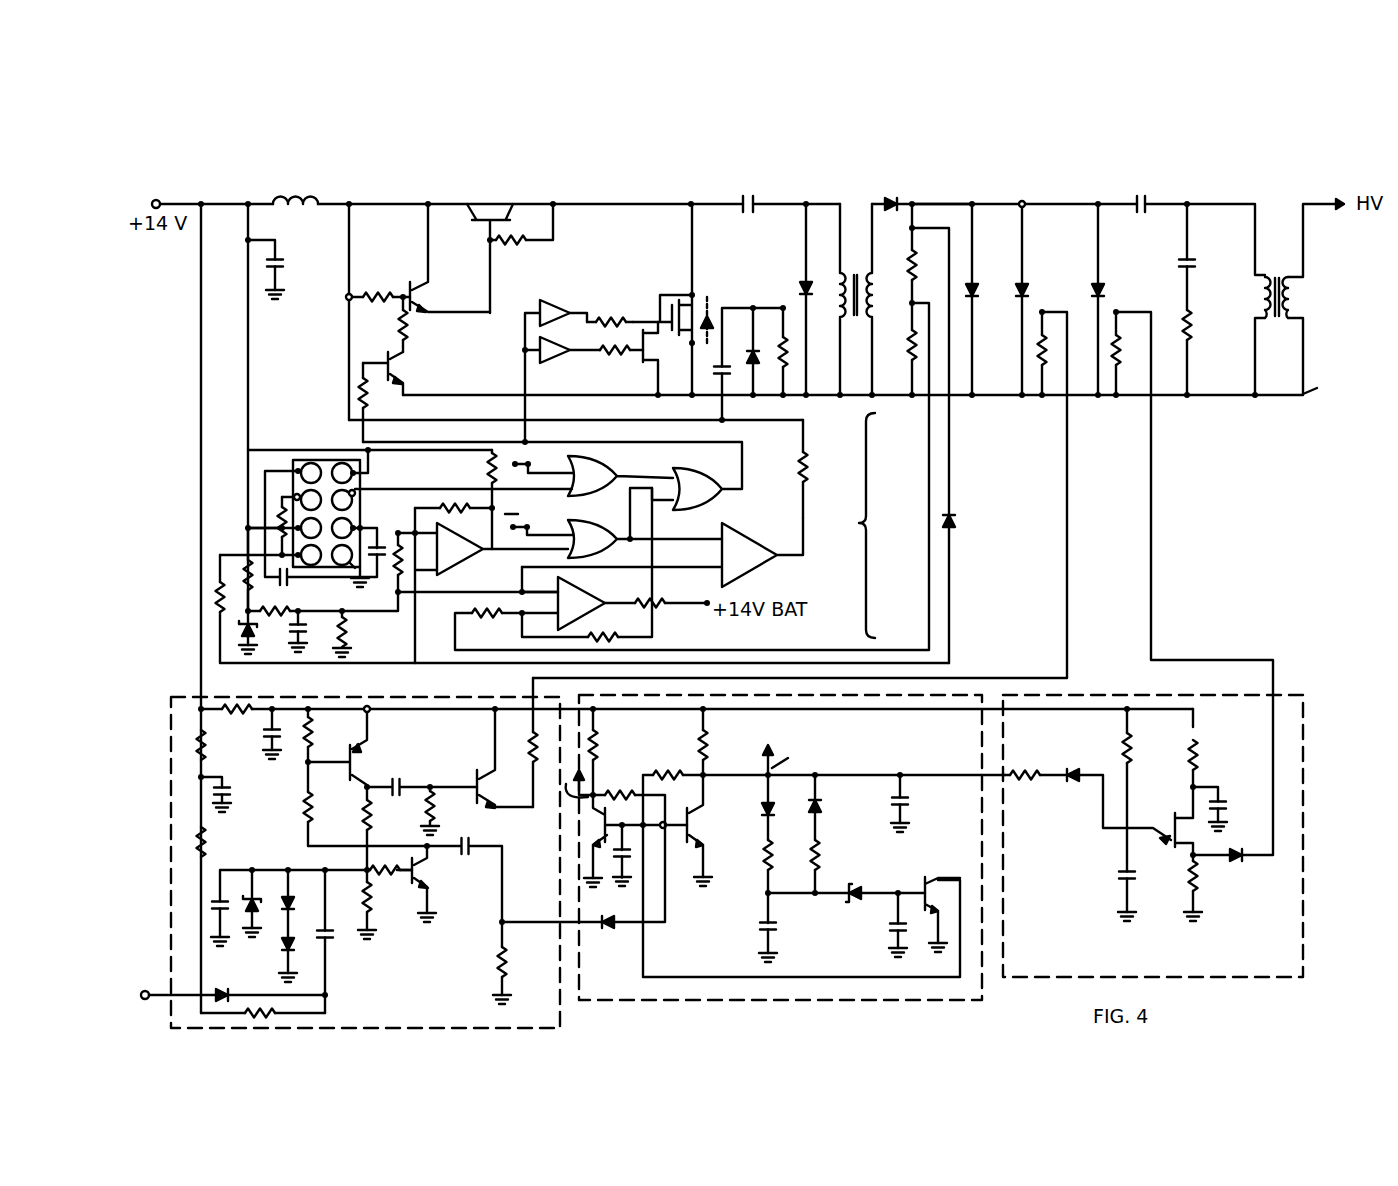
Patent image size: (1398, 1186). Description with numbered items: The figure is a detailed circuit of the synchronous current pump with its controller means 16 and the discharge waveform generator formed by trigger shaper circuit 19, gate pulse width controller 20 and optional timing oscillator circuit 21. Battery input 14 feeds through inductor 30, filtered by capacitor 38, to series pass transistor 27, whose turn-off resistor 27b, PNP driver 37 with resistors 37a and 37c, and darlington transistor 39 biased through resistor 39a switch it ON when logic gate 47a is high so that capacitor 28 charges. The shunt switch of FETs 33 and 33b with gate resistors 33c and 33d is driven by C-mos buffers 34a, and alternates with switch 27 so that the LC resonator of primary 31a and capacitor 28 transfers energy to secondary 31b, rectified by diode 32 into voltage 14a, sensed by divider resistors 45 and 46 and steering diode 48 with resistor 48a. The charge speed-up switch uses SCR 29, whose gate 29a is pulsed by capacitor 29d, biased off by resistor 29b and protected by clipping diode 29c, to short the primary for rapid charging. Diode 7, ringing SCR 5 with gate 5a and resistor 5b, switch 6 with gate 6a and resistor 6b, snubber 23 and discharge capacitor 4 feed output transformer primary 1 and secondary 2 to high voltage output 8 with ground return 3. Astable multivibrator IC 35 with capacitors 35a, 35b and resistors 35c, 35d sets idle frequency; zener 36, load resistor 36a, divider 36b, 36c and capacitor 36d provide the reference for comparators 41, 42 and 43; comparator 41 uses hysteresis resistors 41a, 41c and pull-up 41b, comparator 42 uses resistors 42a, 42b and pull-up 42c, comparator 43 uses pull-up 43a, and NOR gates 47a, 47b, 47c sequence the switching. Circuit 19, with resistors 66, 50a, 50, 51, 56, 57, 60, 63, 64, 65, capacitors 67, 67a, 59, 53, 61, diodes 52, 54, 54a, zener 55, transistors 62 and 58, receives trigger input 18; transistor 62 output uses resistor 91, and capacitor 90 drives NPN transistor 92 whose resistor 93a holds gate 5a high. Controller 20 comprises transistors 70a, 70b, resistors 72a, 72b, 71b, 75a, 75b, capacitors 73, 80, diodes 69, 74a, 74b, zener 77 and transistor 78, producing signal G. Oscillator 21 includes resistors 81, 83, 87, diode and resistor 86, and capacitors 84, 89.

The battery input 14 is at (182, 191).
The input inductor 30 is at (295, 189).
The input filter capacitor 38 is at (277, 268).
The series pass switch transistor 27 is at (490, 245).
The turn-off resistor 27b is at (520, 236).
The PNP transistor 37 is at (450, 258).
The turn-off resistor 37a is at (378, 283).
The bias resistor 37c is at (422, 324).
The NPN darlington transistor 39 is at (397, 371).
The bias resistor 39a is at (381, 402).
The storage capacitor 28 is at (747, 193).
The shunt switch FET 33 is at (673, 301).
The shunt switch FET 33b is at (636, 360).
The gate resistor 33c is at (611, 309).
The gate resistor 33d is at (620, 362).
The C-mos inverter buffers 34a is at (561, 360).
The charge speed-up SCR 29 is at (793, 301).
The SCR gate 29a is at (750, 351).
The bias resistor 29b is at (783, 372).
The clipping diode 29c is at (757, 372).
The trigger capacitor 29d is at (720, 376).
The transformer primary winding 31a is at (832, 301).
The transformer secondary winding 31b is at (890, 301).
The rectifier diode 32 is at (892, 191).
The rectified secondary voltage 14a is at (942, 189).
The voltage divider resistor 46 is at (901, 255).
The voltage divider resistor 45 is at (901, 350).
The steering diode 48 is at (949, 445).
The diode 7 is at (980, 299).
The ringing SCR 5 is at (1030, 299).
The SCR gate 5a is at (804, 481).
The gate resistor 5b is at (1047, 366).
The output switch 6 is at (1106, 299).
The gate of switch 6 6a is at (1193, 573).
The gate resistor 6b is at (1129, 355).
The discharge capacitor 4 is at (1141, 192).
The RC snubber 23 is at (1199, 299).
The output transformer primary 1 is at (1258, 297).
The output transformer secondary 2 is at (1302, 297).
The high voltage output 8 is at (1334, 216).
The ground return 3 is at (1317, 383).
The astable multivibrator IC 35 is at (333, 460).
The multivibrator capacitor 35a is at (381, 545).
The multivibrator capacitor 35b is at (324, 586).
The multivibrator resistor 35c is at (275, 528).
The multivibrator resistor 35d is at (280, 510).
The zener diode 36 is at (237, 633).
The zener load resistor 36a is at (247, 565).
The divider resistor 36b is at (273, 618).
The divider resistor 36c is at (360, 634).
The reference smoothing capacitor 36d is at (310, 632).
The resistor 48a is at (218, 612).
The resistor 66 is at (237, 698).
The comparator 41 is at (490, 585).
The hysteresis resistor 41a is at (453, 506).
The pull-up resistor 41b is at (477, 499).
The hysteresis resistor 41c is at (476, 562).
The logic gate 47a is at (718, 497).
The logic gate 47b is at (613, 528).
The logic gate 47c is at (612, 486).
The comparator 43 is at (662, 558).
The pull-up resistor 43a is at (825, 469).
The voltage regulator comparator 42 is at (590, 583).
The hysteresis resistor 42a is at (692, 476).
The hysteresis resistor 42b is at (587, 565).
The pull-up resistor 42c is at (657, 590).
The controller means 16 is at (882, 525).
The trigger shaper/initiator circuit 19 is at (560, 1018).
The resistor 50a is at (199, 740).
The resistor 50 is at (215, 842).
The capacitor 67 is at (258, 734).
The capacitor 67a is at (234, 794).
The resistor 65 is at (323, 737).
The resistor 64 is at (366, 804).
The transistor 62 is at (352, 749).
The resistor 63 is at (381, 828).
The coupling capacitor 90 is at (422, 774).
The resistor 91 is at (441, 811).
The NPN transistor 92 is at (505, 758).
The resistor 93a is at (516, 742).
The transistor 58 is at (426, 884).
The resistor 57 is at (389, 881).
The resistor 56 is at (359, 904).
The coupling capacitor 61 is at (463, 870).
The resistor 60 is at (513, 961).
The capacitor 59 is at (289, 908).
The zener diode 55 is at (262, 902).
The diode 54 is at (299, 902).
The diode 54a is at (270, 960).
The capacitor 53 is at (338, 940).
The diode 52 is at (264, 983).
The resistor 51 is at (252, 1021).
The trigger input 18 is at (173, 984).
The gate pulse width controller 20 is at (922, 1000).
The resistor 72a is at (600, 753).
The resistor 72b is at (724, 743).
The transistor 70a is at (622, 841).
The transistor 70b is at (708, 830).
The resistor 71b is at (824, 863).
The capacitor 73 is at (632, 858).
The diode 69 is at (583, 871).
The diode 74a is at (766, 792).
The diode 74b is at (835, 807).
The resistor 75a is at (752, 901).
The resistor 75b is at (846, 868).
The zener diode 77 is at (867, 884).
The transistor 78 is at (926, 905).
The capacitor 80 is at (913, 803).
The timing oscillator circuit 21 is at (1303, 785).
The resistor 81 is at (1036, 762).
The diode and resistor 86 is at (1143, 783).
The resistor 83 is at (1142, 790).
The capacitor 84 is at (1116, 893).
The capacitor 89 is at (1222, 809).
The resistor 87 is at (1205, 888).